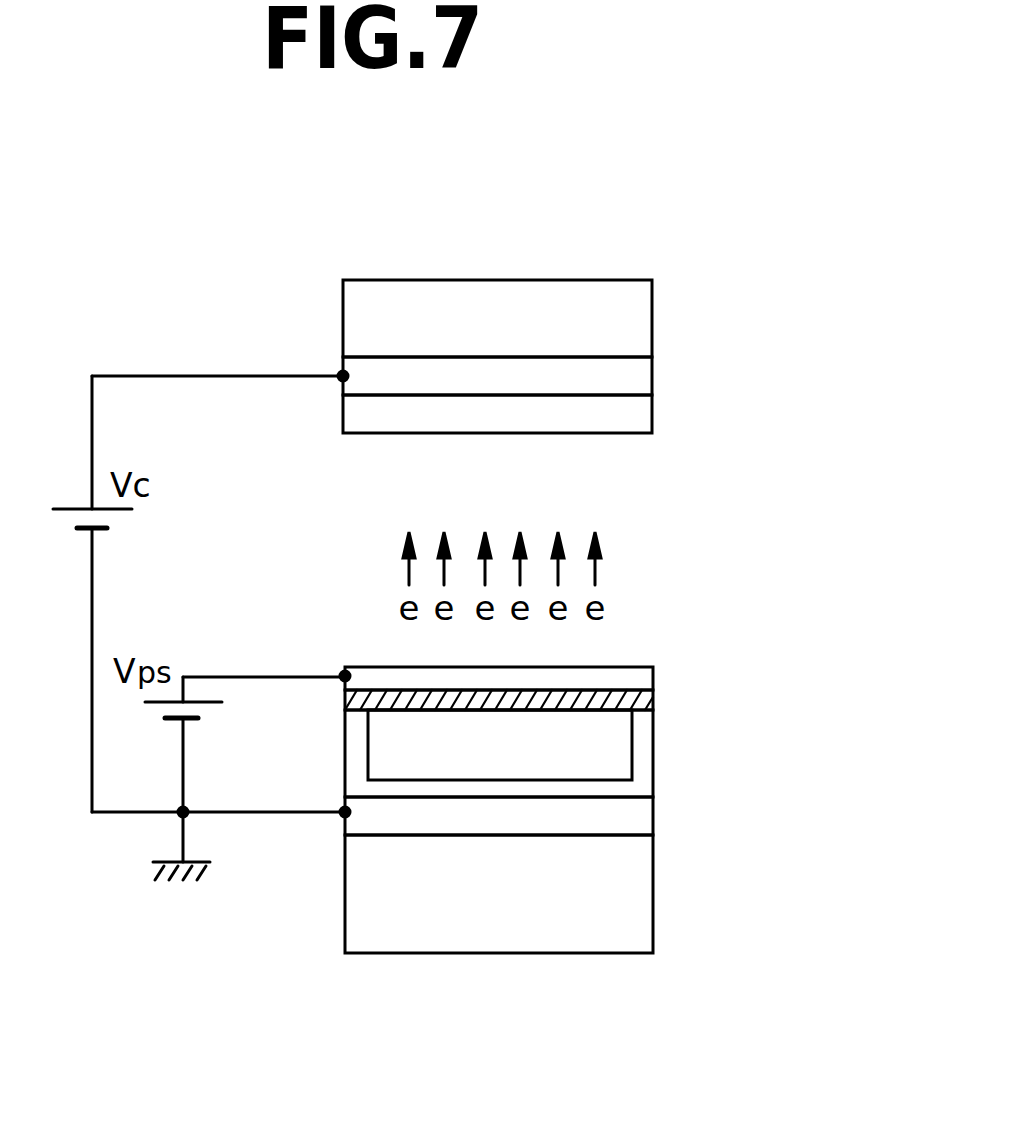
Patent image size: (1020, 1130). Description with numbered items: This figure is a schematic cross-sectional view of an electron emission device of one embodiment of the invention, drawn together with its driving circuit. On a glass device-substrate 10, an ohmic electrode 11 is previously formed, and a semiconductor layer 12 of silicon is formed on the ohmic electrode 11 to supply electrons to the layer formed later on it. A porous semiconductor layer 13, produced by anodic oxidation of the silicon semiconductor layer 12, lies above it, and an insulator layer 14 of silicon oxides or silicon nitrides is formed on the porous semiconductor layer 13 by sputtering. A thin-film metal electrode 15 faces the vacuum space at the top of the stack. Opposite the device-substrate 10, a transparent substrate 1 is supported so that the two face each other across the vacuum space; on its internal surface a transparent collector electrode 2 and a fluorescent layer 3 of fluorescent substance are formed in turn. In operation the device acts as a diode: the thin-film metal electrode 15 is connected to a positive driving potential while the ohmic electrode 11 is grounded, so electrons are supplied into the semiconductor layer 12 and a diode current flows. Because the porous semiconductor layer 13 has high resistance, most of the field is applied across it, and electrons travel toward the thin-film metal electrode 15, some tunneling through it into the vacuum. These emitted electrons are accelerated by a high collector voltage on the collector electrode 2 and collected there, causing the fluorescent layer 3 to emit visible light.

The transparent substrate 1 is at (652, 318).
The transparent collector electrode 2 is at (652, 378).
The fluorescent layer 3 is at (645, 412).
The device-substrate 10 is at (643, 890).
The ohmic electrode 11 is at (643, 813).
The semiconductor layer 12 is at (353, 760).
The porous semiconductor layer 13 is at (618, 757).
The insulator layer 14 is at (645, 700).
The thin-film metal electrode 15 is at (345, 672).